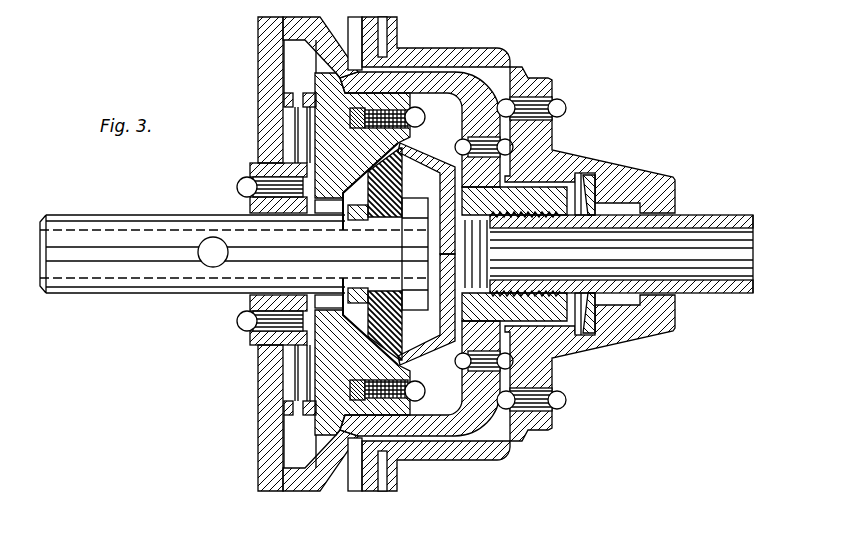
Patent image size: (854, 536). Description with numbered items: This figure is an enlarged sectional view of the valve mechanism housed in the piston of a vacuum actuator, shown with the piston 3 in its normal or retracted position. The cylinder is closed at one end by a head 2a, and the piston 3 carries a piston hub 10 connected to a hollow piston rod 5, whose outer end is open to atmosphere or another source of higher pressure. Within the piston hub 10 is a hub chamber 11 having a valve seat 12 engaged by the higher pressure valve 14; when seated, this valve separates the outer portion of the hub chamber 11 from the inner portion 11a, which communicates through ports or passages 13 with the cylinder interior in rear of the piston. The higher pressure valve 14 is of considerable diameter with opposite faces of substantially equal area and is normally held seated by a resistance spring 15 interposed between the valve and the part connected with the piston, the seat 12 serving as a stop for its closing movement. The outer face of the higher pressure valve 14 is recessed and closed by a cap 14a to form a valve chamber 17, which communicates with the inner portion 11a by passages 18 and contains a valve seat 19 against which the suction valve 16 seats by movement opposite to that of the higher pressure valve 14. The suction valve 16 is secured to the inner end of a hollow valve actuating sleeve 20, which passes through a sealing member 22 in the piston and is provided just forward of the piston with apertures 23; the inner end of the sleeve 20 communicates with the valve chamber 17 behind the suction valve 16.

The cylinder head 2a is at (390, 23).
The piston 3 is at (260, 24).
The piston rod 5 is at (698, 227).
The piston hub 10 is at (464, 97).
The hub chamber 11 is at (440, 411).
The inner portion of hub chamber 11a is at (298, 60).
The valve seat 12 is at (341, 442).
The ports or passages 13 is at (316, 47).
The higher pressure valve 14 is at (338, 107).
The cap or closure 14a is at (428, 154).
The resistance spring 15 is at (288, 101).
The suction valve 16 is at (400, 186).
The valve chamber 17 is at (421, 338).
The passages 18 is at (285, 230).
The valve seat 19 is at (367, 343).
The valve actuating sleeve 20 is at (82, 218).
The sealing member 22 is at (253, 299).
The apertures 23 is at (211, 264).